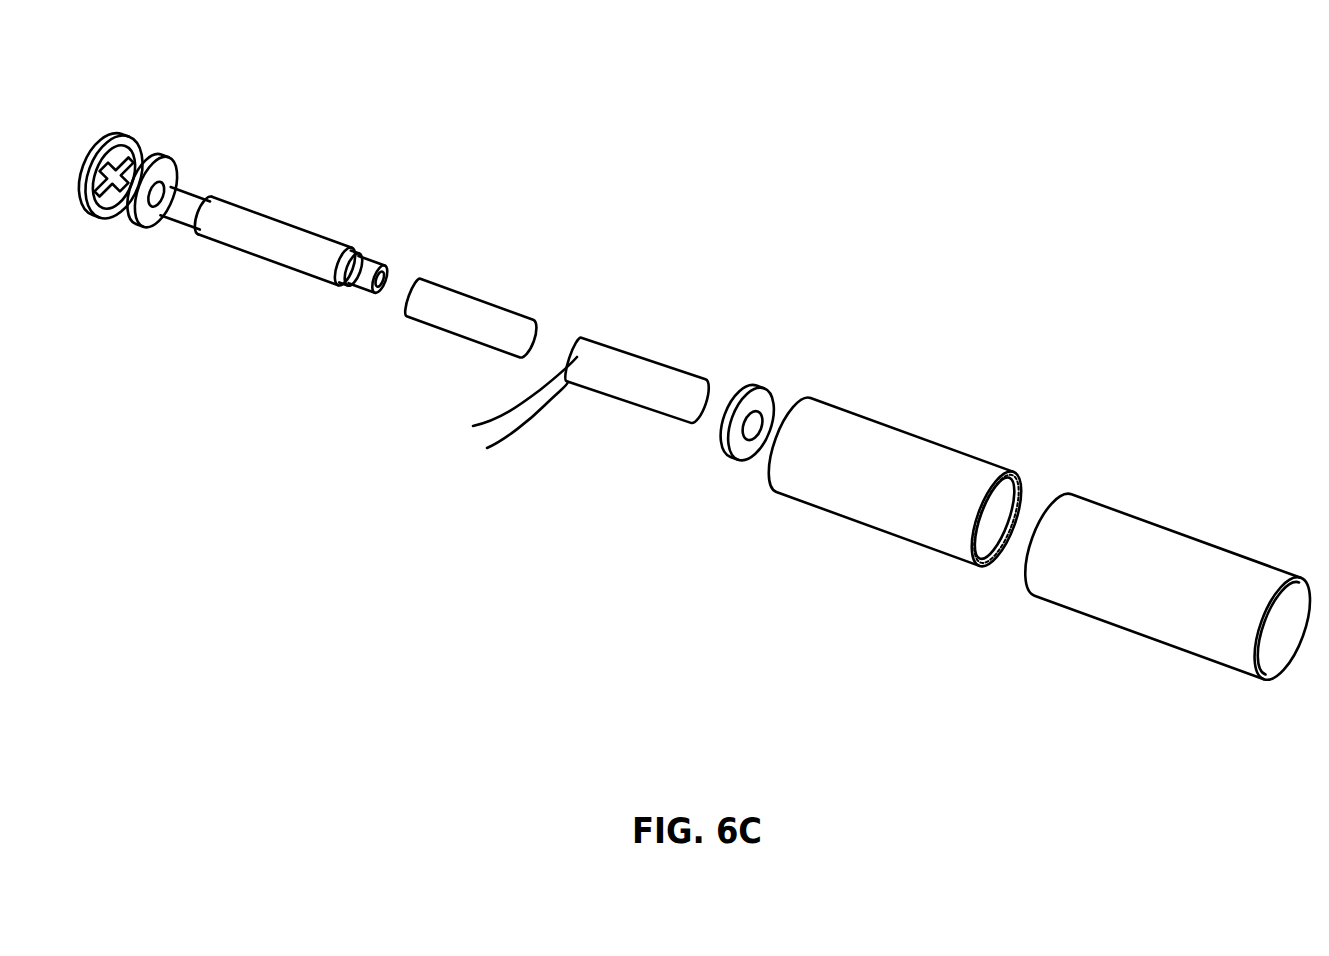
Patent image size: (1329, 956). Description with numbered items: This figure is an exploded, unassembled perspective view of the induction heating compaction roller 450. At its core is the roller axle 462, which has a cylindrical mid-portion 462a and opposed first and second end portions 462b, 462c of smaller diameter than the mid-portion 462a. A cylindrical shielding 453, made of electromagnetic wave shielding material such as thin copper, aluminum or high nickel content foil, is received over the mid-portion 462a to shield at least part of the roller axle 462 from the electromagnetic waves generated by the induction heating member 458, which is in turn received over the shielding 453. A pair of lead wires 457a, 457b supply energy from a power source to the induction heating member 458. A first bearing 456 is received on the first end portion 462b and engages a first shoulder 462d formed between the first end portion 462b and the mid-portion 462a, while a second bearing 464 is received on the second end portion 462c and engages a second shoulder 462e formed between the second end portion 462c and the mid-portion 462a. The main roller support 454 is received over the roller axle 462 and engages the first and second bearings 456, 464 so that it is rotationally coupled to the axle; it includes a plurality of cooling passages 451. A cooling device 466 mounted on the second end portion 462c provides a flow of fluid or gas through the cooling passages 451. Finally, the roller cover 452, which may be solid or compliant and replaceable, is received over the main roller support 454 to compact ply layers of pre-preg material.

The compaction roller 450 is at (898, 125).
The cooling passages 451 is at (1027, 490).
The roller cover 452 is at (1193, 575).
The cylindrical shielding 453 is at (487, 307).
The main roller support 454 is at (934, 468).
The first bearing 456 is at (760, 385).
The lead wire 457a is at (487, 448).
The lead wire 457b is at (488, 421).
The induction heating member 458 is at (640, 363).
The roller axle 462 is at (310, 241).
The cylindrical mid-portion 462a is at (297, 240).
The first end portion 462b is at (367, 267).
The second end portion 462c is at (197, 188).
The first shoulder 462d is at (336, 290).
The second shoulder 462e is at (198, 227).
The second bearing 464 is at (163, 158).
The cooling device 466 is at (108, 135).